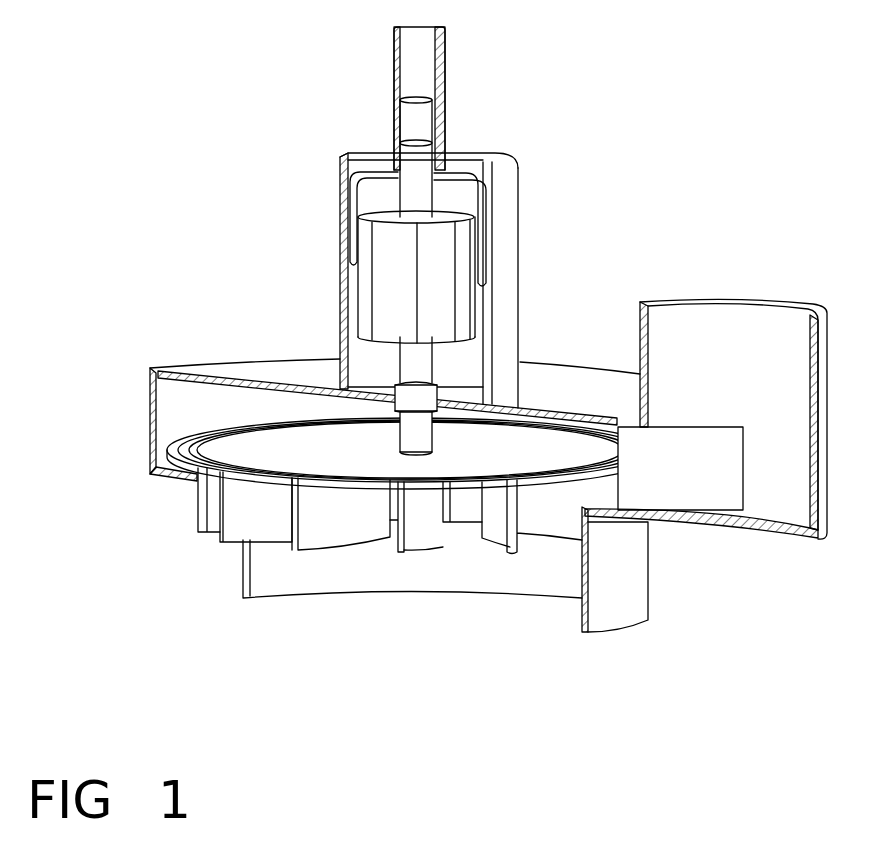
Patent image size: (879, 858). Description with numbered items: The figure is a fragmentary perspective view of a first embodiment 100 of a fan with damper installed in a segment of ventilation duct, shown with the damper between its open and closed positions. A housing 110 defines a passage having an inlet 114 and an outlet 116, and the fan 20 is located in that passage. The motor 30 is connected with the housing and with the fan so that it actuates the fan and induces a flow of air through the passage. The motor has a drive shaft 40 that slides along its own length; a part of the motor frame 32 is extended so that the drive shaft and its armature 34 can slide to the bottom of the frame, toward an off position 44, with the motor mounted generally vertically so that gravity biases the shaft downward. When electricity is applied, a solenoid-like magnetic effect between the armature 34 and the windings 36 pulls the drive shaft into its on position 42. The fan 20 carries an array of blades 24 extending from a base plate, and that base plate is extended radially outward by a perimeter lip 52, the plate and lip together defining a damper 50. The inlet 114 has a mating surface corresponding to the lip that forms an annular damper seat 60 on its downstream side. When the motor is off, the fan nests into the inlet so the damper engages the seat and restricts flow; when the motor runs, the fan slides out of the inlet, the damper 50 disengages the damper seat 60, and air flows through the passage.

The first embodiment of a fan with damper 100 is at (690, 150).
The fan 20 is at (552, 437).
The blades 24 is at (205, 502).
The motor 30 is at (487, 114).
The motor frame 32 is at (510, 347).
The armature 34 is at (440, 287).
The windings 36 is at (478, 198).
The drive shaft 40 is at (412, 117).
The on position 42 is at (360, 182).
The off position 44 is at (362, 368).
The damper 50 is at (232, 440).
The perimeter lip 52 is at (180, 438).
The damper seat 60 is at (613, 505).
The housing 110 is at (198, 366).
The inlet 114 is at (545, 577).
The outlet 116 is at (765, 320).